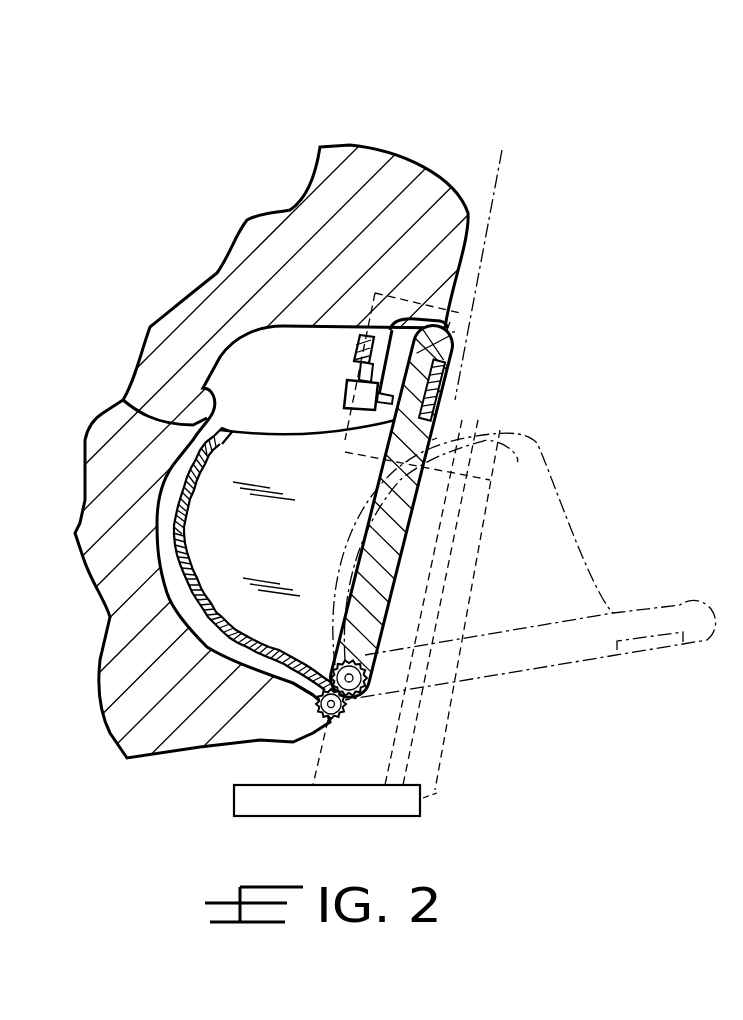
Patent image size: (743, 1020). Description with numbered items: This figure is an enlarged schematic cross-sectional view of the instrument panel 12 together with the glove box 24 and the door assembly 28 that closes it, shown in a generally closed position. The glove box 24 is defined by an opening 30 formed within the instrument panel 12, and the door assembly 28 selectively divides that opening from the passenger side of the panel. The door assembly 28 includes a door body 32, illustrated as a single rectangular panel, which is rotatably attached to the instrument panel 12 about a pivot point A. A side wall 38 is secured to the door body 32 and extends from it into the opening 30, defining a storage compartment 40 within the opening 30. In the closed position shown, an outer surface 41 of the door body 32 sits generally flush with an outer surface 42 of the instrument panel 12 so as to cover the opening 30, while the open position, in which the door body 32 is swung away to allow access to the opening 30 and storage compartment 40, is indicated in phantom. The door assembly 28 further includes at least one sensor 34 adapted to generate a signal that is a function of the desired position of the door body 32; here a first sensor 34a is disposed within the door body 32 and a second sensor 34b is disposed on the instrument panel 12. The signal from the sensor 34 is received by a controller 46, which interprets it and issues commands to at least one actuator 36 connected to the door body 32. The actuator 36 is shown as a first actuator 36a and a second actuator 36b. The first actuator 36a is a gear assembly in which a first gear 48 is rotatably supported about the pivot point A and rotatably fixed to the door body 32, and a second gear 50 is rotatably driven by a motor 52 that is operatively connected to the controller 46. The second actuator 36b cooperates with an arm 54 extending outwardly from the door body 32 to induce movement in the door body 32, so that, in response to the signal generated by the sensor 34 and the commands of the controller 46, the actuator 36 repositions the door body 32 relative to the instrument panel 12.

The instrument panel 12 is at (388, 150).
The glove box 24 is at (160, 196).
The door assembly 28 is at (530, 287).
The opening 30 is at (123, 400).
The door body 32 is at (400, 572).
The sensor 34 is at (498, 412).
The first sensor 34a is at (444, 378).
The second sensor 34b is at (357, 352).
The actuator 36 is at (286, 385).
The first actuator 36a is at (353, 707).
The second actuator 36b is at (347, 390).
The side wall 38 is at (178, 542).
The storage compartment 40 is at (217, 565).
The outer surface 41 is at (415, 493).
The outer surface 42 is at (455, 280).
The controller 46 is at (363, 817).
The first gear 48 is at (367, 676).
The second gear 50 is at (313, 697).
The motor 52 is at (330, 722).
The arm 54 is at (437, 438).
The pivot point A is at (377, 637).